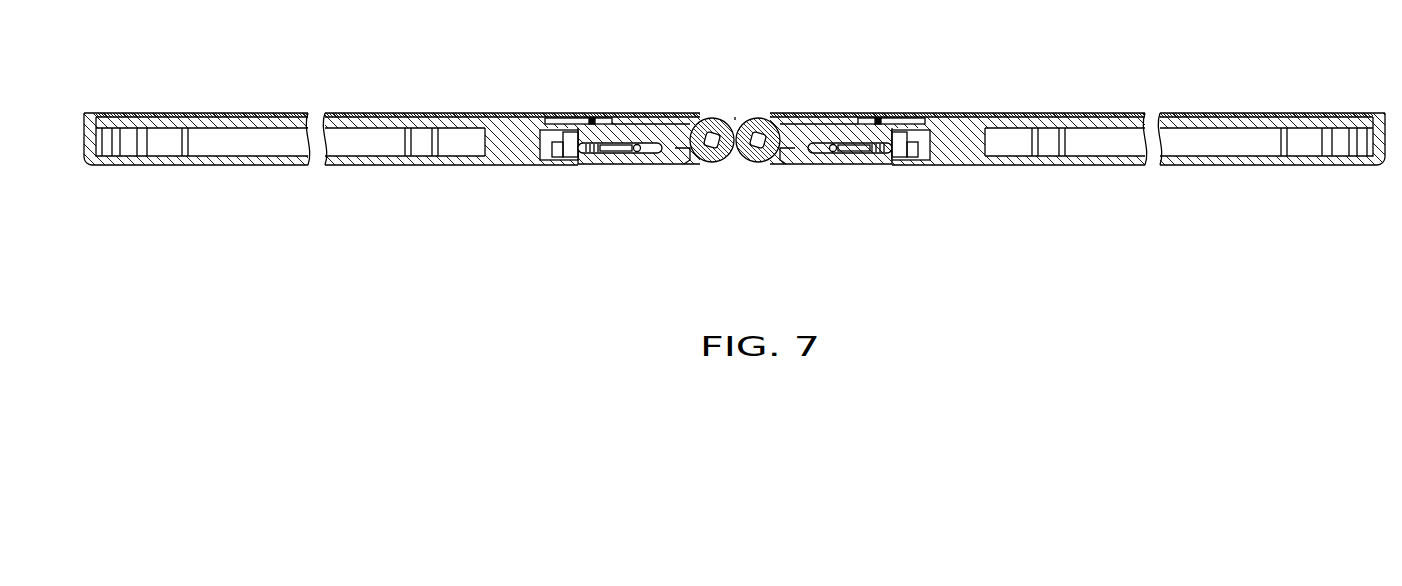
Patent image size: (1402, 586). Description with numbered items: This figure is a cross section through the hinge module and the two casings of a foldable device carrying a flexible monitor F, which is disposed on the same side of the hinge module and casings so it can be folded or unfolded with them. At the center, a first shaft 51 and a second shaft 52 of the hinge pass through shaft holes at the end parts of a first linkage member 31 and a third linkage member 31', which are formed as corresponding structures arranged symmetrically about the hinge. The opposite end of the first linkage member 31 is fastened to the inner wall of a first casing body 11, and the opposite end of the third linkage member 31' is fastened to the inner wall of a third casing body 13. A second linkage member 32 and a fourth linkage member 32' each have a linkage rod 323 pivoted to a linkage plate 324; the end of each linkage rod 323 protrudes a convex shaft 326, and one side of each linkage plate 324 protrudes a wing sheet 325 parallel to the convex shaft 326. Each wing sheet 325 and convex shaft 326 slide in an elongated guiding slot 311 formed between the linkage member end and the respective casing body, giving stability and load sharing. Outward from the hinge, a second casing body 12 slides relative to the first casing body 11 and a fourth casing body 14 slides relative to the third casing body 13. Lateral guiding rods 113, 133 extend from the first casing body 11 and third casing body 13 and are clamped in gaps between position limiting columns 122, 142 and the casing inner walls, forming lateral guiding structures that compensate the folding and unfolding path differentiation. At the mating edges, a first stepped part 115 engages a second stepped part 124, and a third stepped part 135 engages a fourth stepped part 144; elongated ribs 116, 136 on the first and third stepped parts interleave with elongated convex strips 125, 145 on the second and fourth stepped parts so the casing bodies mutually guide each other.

The second casing body 12 is at (218, 165).
The lateral guiding rod 113 is at (283, 150).
The position limiting column 122 is at (419, 152).
The second stepped part 124 is at (493, 118).
The elongated convex strips 125 is at (523, 118).
The first stepped part 115 is at (594, 118).
The elongated ribs 116 is at (588, 118).
The elongated guiding slot 311 is at (630, 118).
The first linkage member 31 is at (639, 109).
The third linkage member 31' is at (828, 105).
The second linkage member 32 is at (542, 216).
The fourth linkage member 32' is at (927, 216).
The linkage rod 323 is at (652, 162).
The linkage plate 324 is at (617, 158).
The wing sheet 325 is at (592, 160).
The convex shaft 326 is at (638, 160).
The first casing body 11 is at (672, 164).
The third casing body 13 is at (797, 164).
The first shaft 51 is at (711, 162).
The second shaft 52 is at (756, 162).
The flexible monitor F is at (738, 115).
The third stepped part 135 is at (876, 118).
The elongated ribs 136 is at (882, 118).
The fourth stepped part 144 is at (975, 113).
The elongated convex strips 145 is at (945, 115).
The position limiting column 142 is at (1050, 152).
The lateral guiding rod 133 is at (1187, 150).
The fourth casing body 14 is at (1252, 165).